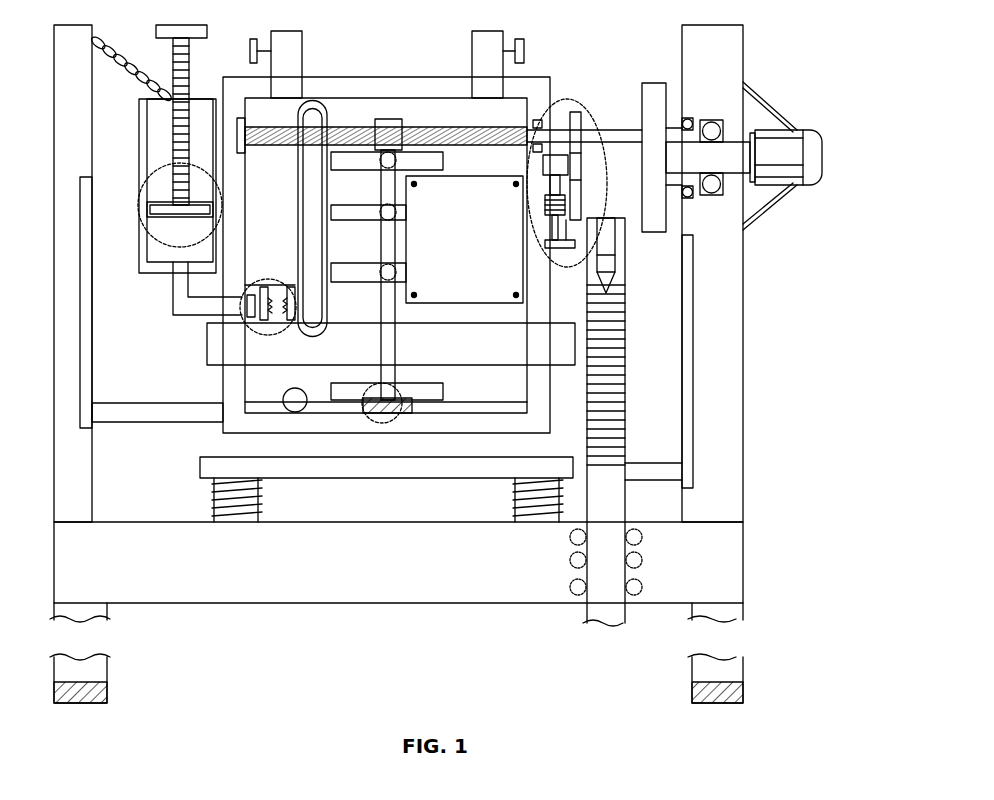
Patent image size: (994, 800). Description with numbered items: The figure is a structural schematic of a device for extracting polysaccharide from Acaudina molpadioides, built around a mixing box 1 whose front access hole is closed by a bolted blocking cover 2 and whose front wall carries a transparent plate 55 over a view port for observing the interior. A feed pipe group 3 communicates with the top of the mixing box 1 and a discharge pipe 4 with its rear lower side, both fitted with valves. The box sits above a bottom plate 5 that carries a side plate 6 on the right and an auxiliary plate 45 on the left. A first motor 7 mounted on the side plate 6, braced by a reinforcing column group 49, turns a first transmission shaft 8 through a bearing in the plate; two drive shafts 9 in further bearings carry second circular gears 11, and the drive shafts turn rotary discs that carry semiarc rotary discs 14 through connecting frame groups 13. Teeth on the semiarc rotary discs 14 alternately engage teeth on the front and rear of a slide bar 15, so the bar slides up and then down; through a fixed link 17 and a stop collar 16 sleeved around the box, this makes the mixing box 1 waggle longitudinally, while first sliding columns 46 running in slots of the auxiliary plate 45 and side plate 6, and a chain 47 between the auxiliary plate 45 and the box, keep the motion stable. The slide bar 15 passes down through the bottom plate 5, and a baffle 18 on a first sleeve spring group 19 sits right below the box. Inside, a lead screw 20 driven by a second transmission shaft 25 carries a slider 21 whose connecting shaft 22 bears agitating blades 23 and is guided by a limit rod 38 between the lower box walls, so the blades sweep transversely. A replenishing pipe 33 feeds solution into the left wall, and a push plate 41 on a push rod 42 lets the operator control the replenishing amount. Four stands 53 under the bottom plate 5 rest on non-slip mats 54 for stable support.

The mixing box 1 is at (457, 88).
The blocking cover 2 is at (492, 288).
The feed pipe group 3 is at (292, 63).
The discharge pipe 4 is at (290, 392).
The bottom plate 5 is at (438, 522).
The side plate 6 is at (730, 300).
The first motor 7 is at (770, 185).
The first transmission shaft 8 is at (723, 162).
The drive shaft 9 is at (690, 127).
The second circular gear 11 is at (650, 103).
The connecting frame group 13 is at (605, 228).
The semiarc rotary disc 14 is at (605, 268).
The slide bar 15 is at (605, 615).
The stop collar 16 is at (215, 333).
The fixed link 17 is at (577, 345).
The baffle 18 is at (283, 460).
The first sleeve spring group 19 is at (520, 508).
The lead screw 20 is at (455, 128).
The slider 21 is at (397, 120).
The connecting shaft 22 is at (385, 310).
The agitating blade 23 is at (380, 230).
The second transmission shaft 25 is at (165, 268).
The replenishing pipe 33 is at (178, 303).
The limit rod 38 is at (505, 405).
The push plate 41 is at (197, 30).
The push rod 42 is at (180, 80).
The auxiliary plate 45 is at (80, 497).
The first sliding column 46 is at (165, 412).
The chain 47 is at (97, 40).
The reinforcing column group 49 is at (760, 110).
The stand 53 is at (705, 668).
The non-slip mat 54 is at (107, 682).
The transparent plate 55 is at (312, 213).